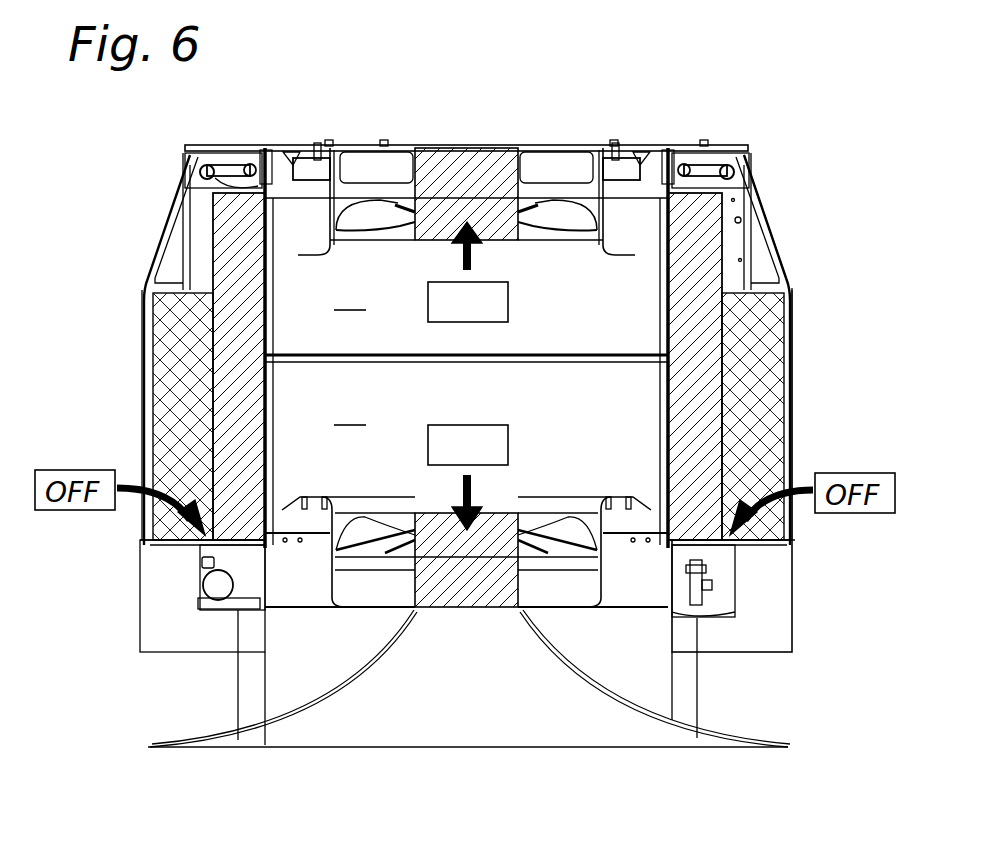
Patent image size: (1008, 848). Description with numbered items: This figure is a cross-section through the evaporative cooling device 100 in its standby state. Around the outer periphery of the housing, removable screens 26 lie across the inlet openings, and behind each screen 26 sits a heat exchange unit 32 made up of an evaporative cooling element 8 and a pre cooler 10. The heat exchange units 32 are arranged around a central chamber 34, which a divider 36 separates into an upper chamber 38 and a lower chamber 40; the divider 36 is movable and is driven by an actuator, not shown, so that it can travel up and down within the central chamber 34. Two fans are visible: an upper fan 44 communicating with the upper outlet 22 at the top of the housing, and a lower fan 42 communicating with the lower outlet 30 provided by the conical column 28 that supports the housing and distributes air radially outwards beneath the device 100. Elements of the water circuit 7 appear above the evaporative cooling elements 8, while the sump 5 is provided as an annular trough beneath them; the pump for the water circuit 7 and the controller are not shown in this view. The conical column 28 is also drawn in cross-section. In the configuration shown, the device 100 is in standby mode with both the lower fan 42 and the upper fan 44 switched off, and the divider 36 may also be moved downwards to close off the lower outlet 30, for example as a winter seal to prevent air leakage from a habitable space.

The evaporative cooling device 100 is at (784, 144).
The water circuit 7 is at (207, 162).
The upper outlet 22 is at (540, 165).
The upper fan 44 is at (570, 220).
The divider 36 is at (305, 355).
The upper chamber 38 is at (350, 297).
The lower chamber 40 is at (350, 412).
The central chamber 34 is at (305, 390).
The evaporative cooling element 8 is at (700, 322).
The heat exchange unit 32 is at (743, 275).
The removable screen 26 is at (793, 380).
The pre cooler 10 is at (750, 440).
The lower fan 42 is at (565, 545).
The sump 5 is at (205, 575).
The lower outlet 30 is at (510, 678).
The conical column 28 is at (618, 705).